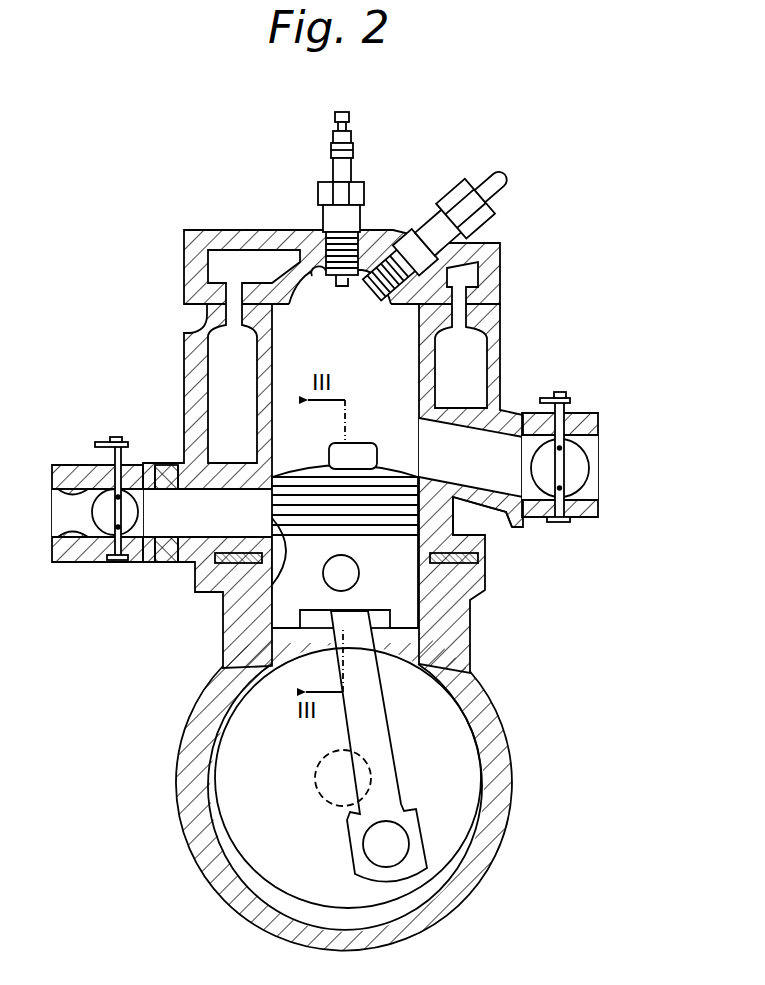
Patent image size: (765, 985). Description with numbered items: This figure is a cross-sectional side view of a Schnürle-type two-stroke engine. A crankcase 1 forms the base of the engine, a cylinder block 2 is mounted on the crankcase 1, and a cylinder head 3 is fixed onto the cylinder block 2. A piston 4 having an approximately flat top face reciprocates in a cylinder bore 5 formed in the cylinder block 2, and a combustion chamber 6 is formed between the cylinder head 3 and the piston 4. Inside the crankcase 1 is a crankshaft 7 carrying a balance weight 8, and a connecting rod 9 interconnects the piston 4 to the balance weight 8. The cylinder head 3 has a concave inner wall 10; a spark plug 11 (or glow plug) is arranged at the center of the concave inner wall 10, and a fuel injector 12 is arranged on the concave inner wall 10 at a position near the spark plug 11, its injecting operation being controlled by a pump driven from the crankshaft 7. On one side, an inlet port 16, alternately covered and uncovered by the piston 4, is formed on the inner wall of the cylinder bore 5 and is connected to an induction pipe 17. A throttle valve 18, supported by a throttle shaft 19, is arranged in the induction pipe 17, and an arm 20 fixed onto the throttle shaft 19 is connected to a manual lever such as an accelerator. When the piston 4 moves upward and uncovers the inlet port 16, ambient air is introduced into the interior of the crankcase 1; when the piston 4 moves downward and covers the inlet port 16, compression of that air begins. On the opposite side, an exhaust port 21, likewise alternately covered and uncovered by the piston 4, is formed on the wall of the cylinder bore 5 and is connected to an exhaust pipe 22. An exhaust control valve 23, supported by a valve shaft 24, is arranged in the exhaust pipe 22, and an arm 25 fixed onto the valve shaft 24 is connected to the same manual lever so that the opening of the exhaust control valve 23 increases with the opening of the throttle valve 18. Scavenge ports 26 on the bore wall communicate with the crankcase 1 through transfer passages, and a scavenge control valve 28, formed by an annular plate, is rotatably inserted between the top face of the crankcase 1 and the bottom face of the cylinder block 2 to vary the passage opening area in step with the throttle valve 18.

The crankcase 1 is at (494, 721).
The cylinder block 2 is at (497, 355).
The cylinder head 3 is at (250, 232).
The piston 4 is at (430, 598).
The cylinder bore 5 is at (278, 372).
The combustion chamber 6 is at (355, 338).
The crankshaft 7 is at (323, 800).
The balance weight 8 is at (470, 800).
The connecting rod 9 is at (378, 737).
The concave inner wall 10 is at (318, 273).
The spark plug 11 is at (350, 163).
The fuel injector 12 is at (430, 238).
The inlet port 16 is at (268, 528).
The induction pipe 17 is at (78, 556).
The throttle valve 18 is at (130, 540).
The throttle shaft 19 is at (105, 458).
The arm 20 is at (112, 437).
The exhaust port 21 is at (412, 445).
The exhaust pipe 22 is at (590, 420).
The exhaust control valve 23 is at (582, 472).
The valve shaft 24 is at (565, 395).
The arm 25 is at (553, 400).
The scavenge ports 26 is at (333, 457).
The scavenge control valve 28 is at (480, 532).